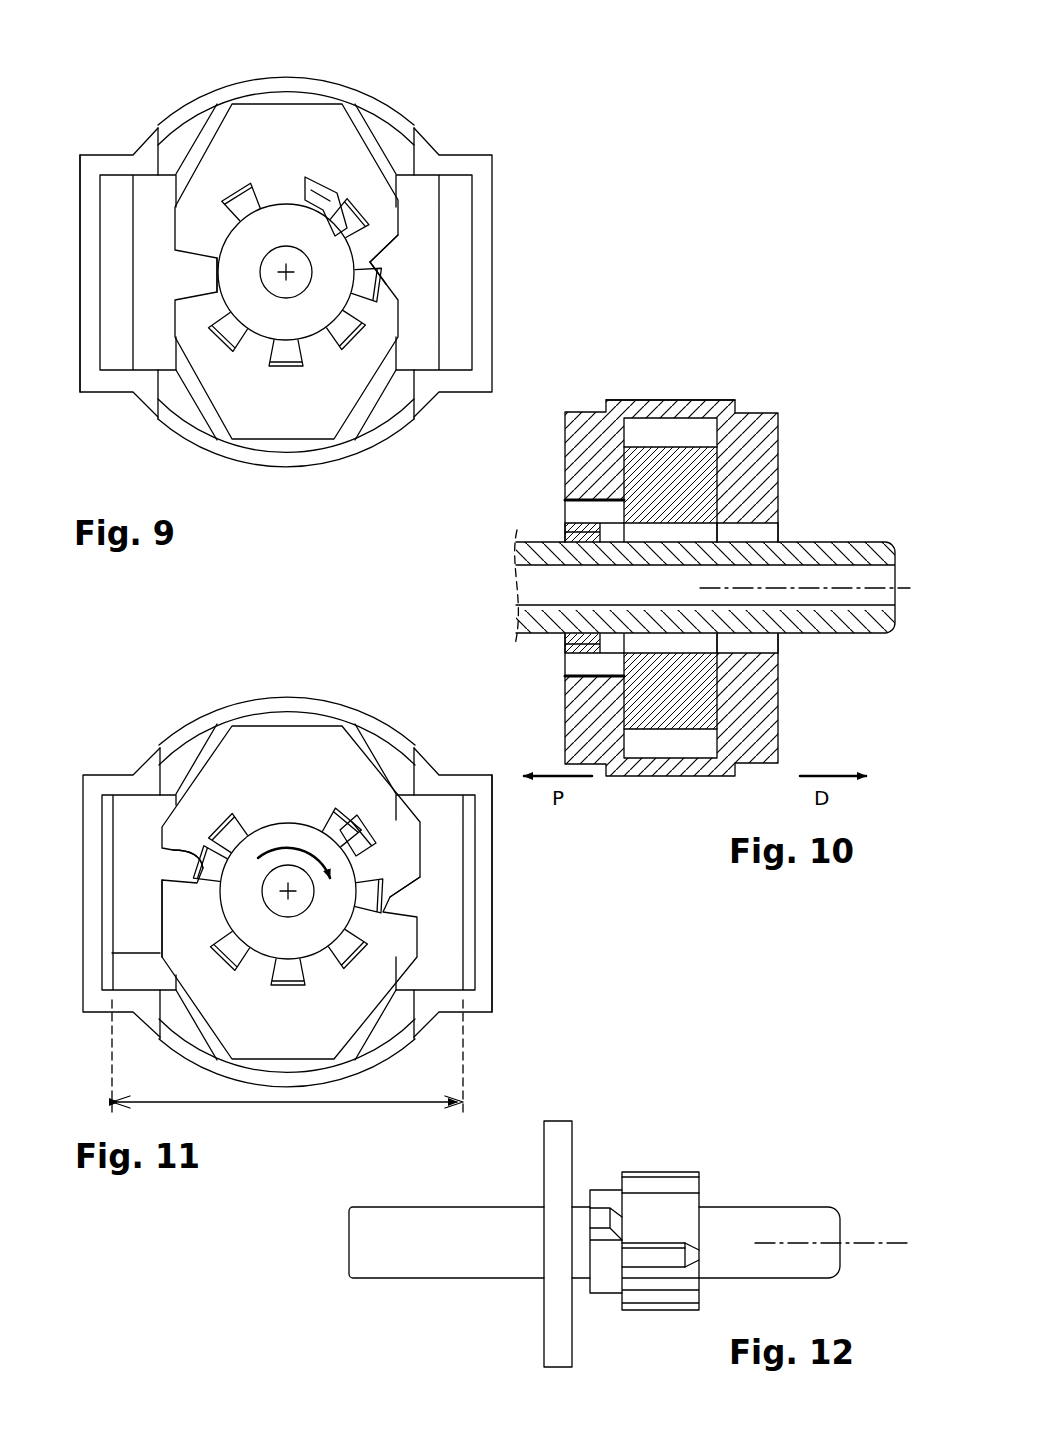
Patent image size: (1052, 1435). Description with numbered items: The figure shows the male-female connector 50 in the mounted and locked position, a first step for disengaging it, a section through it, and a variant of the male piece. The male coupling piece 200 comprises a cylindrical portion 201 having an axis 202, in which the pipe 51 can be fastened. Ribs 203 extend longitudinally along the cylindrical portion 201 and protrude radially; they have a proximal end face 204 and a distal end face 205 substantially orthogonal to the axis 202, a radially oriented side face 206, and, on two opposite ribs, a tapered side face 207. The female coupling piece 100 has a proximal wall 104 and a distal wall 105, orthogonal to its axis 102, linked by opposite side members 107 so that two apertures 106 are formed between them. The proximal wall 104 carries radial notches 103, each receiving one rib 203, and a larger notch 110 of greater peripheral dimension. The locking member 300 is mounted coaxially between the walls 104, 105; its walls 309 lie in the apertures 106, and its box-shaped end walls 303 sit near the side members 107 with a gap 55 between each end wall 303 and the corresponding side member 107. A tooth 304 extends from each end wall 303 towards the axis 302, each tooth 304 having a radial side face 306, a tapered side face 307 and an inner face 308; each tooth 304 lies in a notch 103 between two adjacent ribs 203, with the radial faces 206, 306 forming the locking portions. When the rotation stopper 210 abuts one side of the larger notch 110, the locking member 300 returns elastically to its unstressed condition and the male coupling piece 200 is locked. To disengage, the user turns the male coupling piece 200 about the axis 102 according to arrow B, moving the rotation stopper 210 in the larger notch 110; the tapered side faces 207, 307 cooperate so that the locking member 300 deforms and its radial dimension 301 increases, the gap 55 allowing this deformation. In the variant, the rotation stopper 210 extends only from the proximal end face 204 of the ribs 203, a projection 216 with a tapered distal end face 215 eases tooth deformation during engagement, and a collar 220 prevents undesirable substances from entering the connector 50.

In FIG. 9, the male-female connector 50 is at (125, 72).
In FIG. 10, the male-female connector 50 is at (818, 372).
In FIG. 11, the male-female connector 50 is at (535, 868).
In FIG. 12, the pipe 51 is at (412, 1262).
In FIG. 9, the gap 55 is at (115, 185).
In FIG. 10, the gap 55 is at (698, 428).
In FIG. 11, the gap 55 is at (480, 905).
In FIG. 9, the female coupling piece 100 is at (78, 352).
In FIG. 10, the female coupling piece 100 is at (668, 546).
In FIG. 11, the female coupling piece 100 is at (502, 993).
In FIG. 9, the axis 102 is at (165, 353).
In FIG. 10, the axis 102 is at (715, 612).
In FIG. 11, the axis 102 is at (432, 969).
In FIG. 9, the radial notches 103 is at (318, 368).
In FIG. 11, the radial notches 103 is at (222, 835).
In FIG. 10, the proximal wall 104 is at (590, 445).
In FIG. 10, the distal wall 105 is at (757, 455).
In FIG. 9, the apertures 106 is at (225, 72).
In FIG. 9, the side members 107 is at (88, 272).
In FIG. 10, the side members 107 is at (640, 405).
In FIG. 11, the side members 107 is at (486, 936).
In FIG. 9, the larger notch 110 is at (352, 212).
In FIG. 11, the larger notch 110 is at (324, 832).
In FIG. 9, the male coupling piece 200 is at (239, 315).
In FIG. 10, the male coupling piece 200 is at (710, 592).
In FIG. 11, the male coupling piece 200 is at (324, 882).
In FIG. 12, the male coupling piece 200 is at (686, 1236).
In FIG. 10, the cylindrical portion 201 is at (610, 645).
In FIG. 9, the axis 202 is at (286, 272).
In FIG. 10, the axis 202 is at (712, 587).
In FIG. 11, the axis 202 is at (288, 891).
In FIG. 12, the axis 202 is at (895, 1240).
In FIG. 9, the ribs 203 is at (280, 370).
In FIG. 11, the ribs 203 is at (200, 838).
In FIG. 12, the ribs 203 is at (650, 1185).
In FIG. 12, the proximal end face 204 is at (618, 1300).
In FIG. 12, the distal end face 205 is at (700, 1300).
In FIG. 9, the radial side face 206 is at (355, 220).
In FIG. 9, the tapered side face 207 is at (479, 243).
In FIG. 11, the tapered side face 207 is at (178, 878).
In FIG. 9, the rotation stopper 210 is at (312, 176).
In FIG. 11, the rotation stopper 210 is at (350, 830).
In FIG. 12, the rotation stopper 210 is at (598, 1218).
In FIG. 12, the tapered distal end face 215 is at (695, 1250).
In FIG. 12, the projection 216 is at (672, 1255).
In FIG. 12, the collar 220 is at (558, 1338).
In FIG. 9, the locking member 300 is at (310, 256).
In FIG. 10, the locking member 300 is at (668, 440).
In FIG. 11, the locking member 300 is at (243, 875).
In FIG. 11, the radial dimension 301 is at (287, 1066).
In FIG. 9, the axis 302 is at (280, 298).
In FIG. 10, the axis 302 is at (856, 592).
In FIG. 11, the axis 302 is at (298, 905).
In FIG. 9, the end walls 303 is at (150, 208).
In FIG. 9, the tooth 304 is at (203, 275).
In FIG. 10, the tooth 304 is at (685, 640).
In FIG. 11, the tooth 304 is at (182, 890).
In FIG. 9, the radial side face 306 is at (398, 305).
In FIG. 9, the tapered side face 307 is at (362, 262).
In FIG. 11, the tapered side face 307 is at (185, 935).
In FIG. 10, the inner face 308 is at (690, 640).
In FIG. 9, the walls 309 is at (368, 128).
In FIG. 11, the walls 309 is at (388, 732).